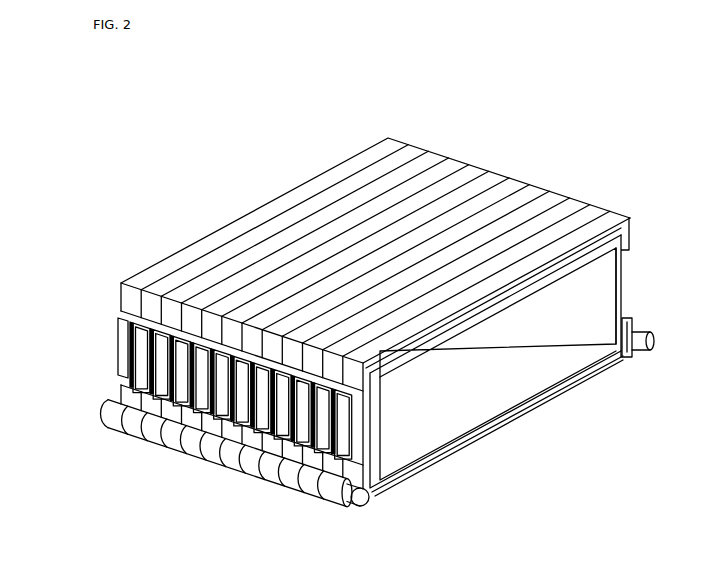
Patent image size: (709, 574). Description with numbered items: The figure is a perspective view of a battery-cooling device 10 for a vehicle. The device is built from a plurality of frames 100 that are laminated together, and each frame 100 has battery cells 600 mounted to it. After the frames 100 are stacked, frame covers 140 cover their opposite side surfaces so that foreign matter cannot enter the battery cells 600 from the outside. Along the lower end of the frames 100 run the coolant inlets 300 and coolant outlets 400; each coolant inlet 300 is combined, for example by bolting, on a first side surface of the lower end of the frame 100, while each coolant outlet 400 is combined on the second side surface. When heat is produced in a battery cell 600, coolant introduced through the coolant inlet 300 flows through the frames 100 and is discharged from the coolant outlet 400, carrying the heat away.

The battery-cooling device 10 is at (369, 345).
The frame 100 is at (128, 366).
The frame cover 140 is at (515, 396).
The coolant inlet 300 is at (332, 495).
The coolant outlet 400 is at (637, 330).
The battery cell 600 is at (122, 343).